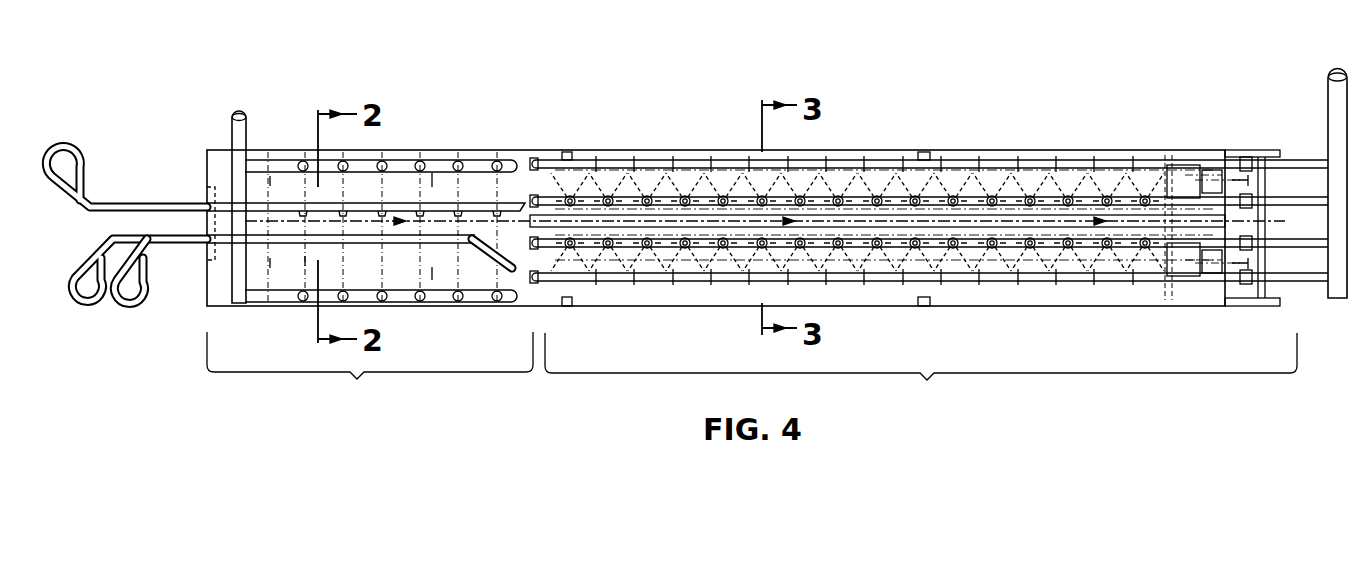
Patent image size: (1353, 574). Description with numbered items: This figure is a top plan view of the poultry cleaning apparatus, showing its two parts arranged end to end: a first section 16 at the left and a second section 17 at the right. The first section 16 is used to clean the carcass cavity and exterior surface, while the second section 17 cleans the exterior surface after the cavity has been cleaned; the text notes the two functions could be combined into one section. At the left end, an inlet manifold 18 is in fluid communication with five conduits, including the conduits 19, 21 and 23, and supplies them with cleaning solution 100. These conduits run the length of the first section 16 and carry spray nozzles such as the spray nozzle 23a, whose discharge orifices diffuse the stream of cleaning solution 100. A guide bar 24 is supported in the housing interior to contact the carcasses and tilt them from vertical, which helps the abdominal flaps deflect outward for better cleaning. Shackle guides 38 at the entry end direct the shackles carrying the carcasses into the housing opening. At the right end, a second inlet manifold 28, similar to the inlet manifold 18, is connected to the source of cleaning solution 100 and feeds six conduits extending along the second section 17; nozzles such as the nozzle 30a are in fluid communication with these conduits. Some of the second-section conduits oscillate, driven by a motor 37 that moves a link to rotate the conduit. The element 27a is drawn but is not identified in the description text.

The first section 16 is at (370, 370).
The second section 17 is at (929, 282).
The inlet manifold 18 is at (243, 130).
The conduit 19 is at (407, 164).
The conduit 21 is at (281, 302).
The conduit 23 is at (445, 205).
The spray nozzle 23a is at (461, 210).
The guide bar 24 is at (130, 298).
The lower bar with handle 27a is at (412, 238).
The second inlet manifold 28 is at (1328, 113).
The nozzle 30a is at (1030, 196).
The motor 37 is at (1262, 155).
The shackle guide 38 is at (73, 157).
The cleaning solution 100 is at (1133, 178).